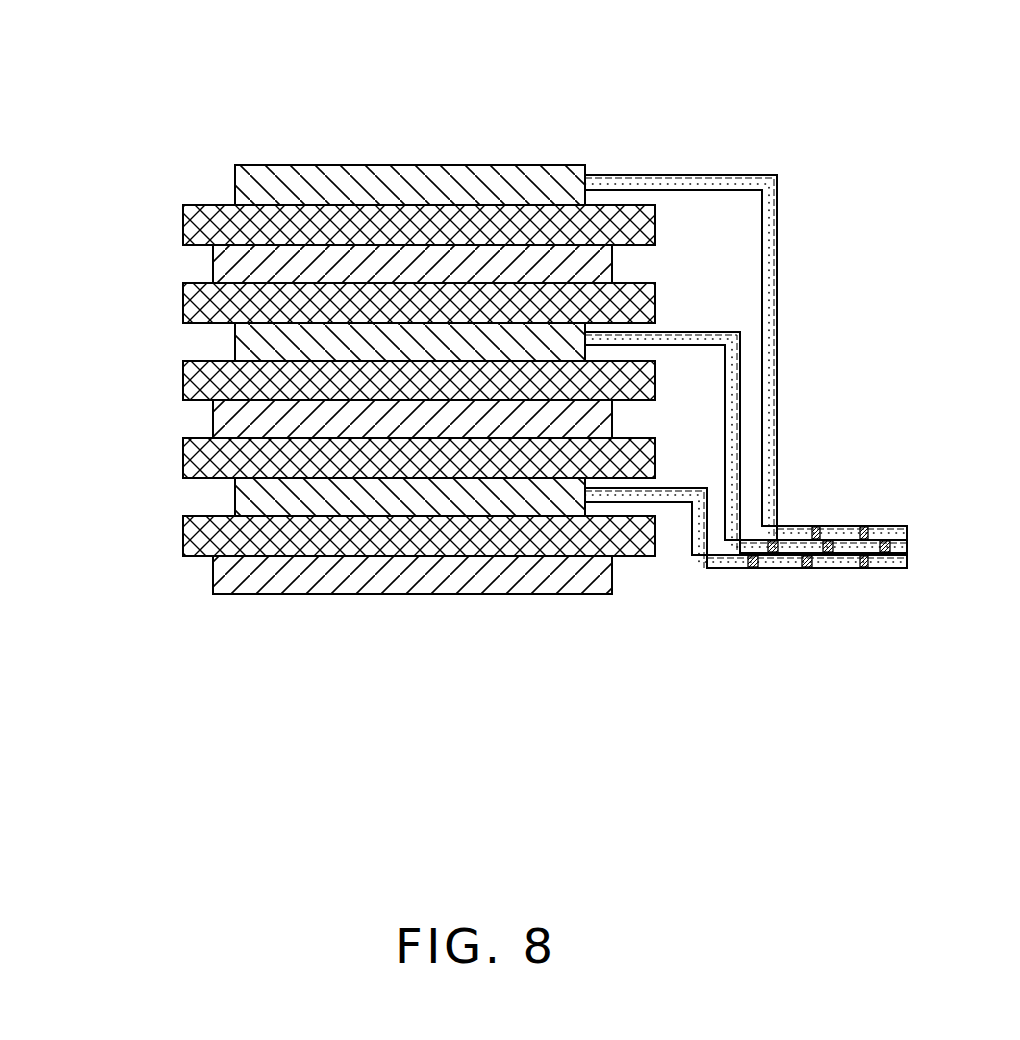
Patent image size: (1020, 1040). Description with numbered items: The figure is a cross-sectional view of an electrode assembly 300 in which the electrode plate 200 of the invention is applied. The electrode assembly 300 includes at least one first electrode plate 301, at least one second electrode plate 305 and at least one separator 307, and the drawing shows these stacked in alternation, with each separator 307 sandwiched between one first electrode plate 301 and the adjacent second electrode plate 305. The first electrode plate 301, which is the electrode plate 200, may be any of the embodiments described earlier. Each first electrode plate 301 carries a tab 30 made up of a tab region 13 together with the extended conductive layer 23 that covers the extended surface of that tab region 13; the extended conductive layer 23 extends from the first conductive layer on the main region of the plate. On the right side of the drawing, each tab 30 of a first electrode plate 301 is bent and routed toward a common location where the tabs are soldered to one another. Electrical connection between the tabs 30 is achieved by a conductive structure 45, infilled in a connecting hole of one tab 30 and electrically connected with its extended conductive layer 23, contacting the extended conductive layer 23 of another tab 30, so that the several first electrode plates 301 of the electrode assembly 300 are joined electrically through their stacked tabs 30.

The electrode assembly 300 is at (534, 55).
The first electrode plate 301 is at (312, 182).
The electrode plate 200 is at (223, 176).
The separator 307 is at (170, 228).
The second electrode plate 305 is at (205, 263).
The tab 30 is at (746, 357).
The extended conductive layer 23 is at (746, 371).
The tab region 13 is at (772, 259).
The conductive structure 45 is at (815, 535).